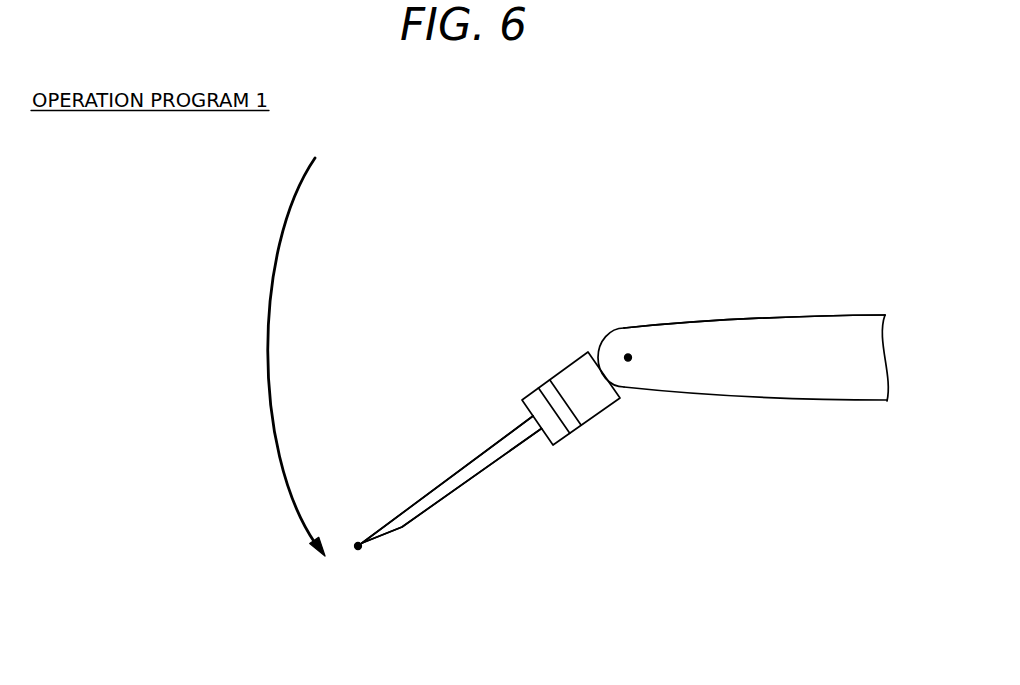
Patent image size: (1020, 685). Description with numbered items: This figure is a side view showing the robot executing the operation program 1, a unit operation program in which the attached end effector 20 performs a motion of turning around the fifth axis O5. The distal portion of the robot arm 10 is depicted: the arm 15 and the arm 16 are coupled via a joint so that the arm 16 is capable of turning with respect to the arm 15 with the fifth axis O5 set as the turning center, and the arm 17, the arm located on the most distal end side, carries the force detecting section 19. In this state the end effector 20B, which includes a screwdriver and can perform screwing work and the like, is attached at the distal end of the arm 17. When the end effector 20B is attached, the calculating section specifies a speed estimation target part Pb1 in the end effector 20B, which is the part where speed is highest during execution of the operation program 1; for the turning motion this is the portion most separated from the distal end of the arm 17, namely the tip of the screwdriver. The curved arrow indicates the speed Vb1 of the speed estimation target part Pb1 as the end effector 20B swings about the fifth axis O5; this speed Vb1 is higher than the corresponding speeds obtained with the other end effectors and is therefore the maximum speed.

The operation program 1 is at (734, 146).
The robot arm 10 is at (830, 316).
The arm 15 is at (731, 357).
The arm 16 is at (623, 327).
The arm 17 is at (568, 378).
The force detecting section 19 is at (542, 387).
The end effector 20B is at (471, 472).
The end effector 20 is at (452, 479).
The fifth axis O5 is at (630, 360).
The speed estimation target part Pb1 is at (358, 549).
The speed Vb1 is at (268, 357).